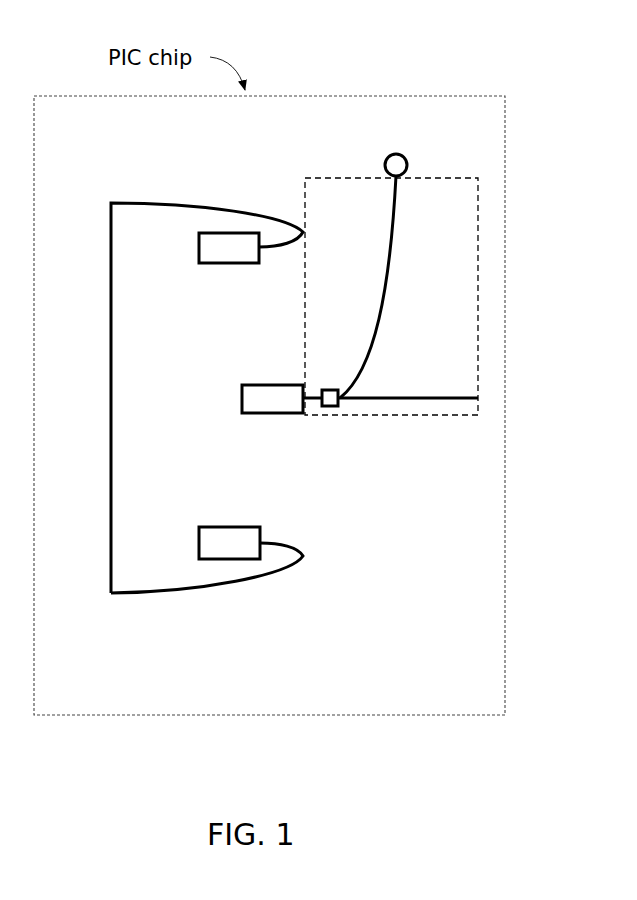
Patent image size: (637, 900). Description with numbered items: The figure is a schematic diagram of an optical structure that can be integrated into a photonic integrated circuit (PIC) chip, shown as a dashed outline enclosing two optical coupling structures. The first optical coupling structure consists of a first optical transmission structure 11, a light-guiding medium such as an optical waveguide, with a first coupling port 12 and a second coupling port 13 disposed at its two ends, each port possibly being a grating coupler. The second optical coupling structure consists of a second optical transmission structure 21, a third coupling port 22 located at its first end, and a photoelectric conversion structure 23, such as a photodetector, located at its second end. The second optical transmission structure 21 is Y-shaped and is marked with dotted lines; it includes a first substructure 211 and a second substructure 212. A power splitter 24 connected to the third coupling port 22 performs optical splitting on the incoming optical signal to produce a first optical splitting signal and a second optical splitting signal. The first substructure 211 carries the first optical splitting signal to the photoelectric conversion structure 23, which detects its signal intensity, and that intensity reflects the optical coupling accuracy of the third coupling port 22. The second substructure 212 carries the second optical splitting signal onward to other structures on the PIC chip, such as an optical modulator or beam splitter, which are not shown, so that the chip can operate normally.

The first optical transmission structure 11 is at (96, 386).
The first coupling port 12 is at (243, 282).
The second coupling port 13 is at (230, 511).
The second optical transmission structure 21 is at (458, 174).
The first substructure 211 is at (402, 236).
The second substructure 212 is at (381, 391).
The third coupling port 22 is at (279, 426).
The photoelectric conversion structure 23 is at (388, 154).
The power splitter 24 is at (333, 416).